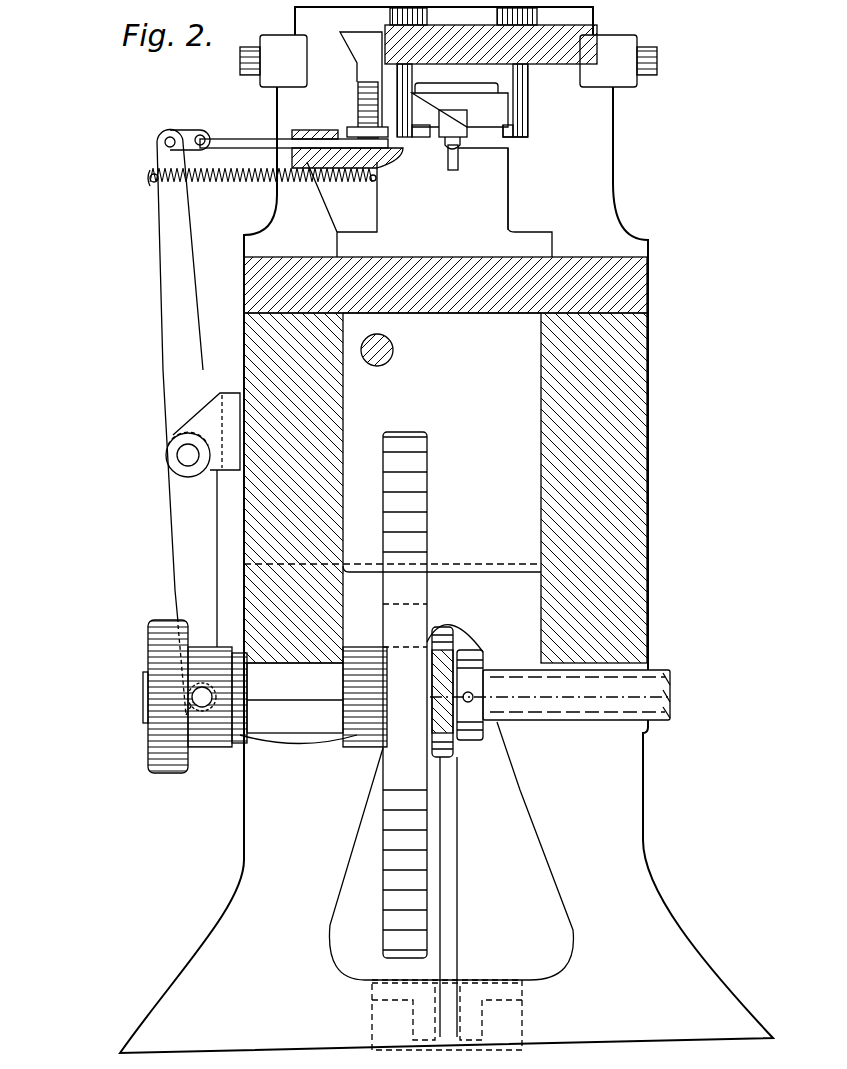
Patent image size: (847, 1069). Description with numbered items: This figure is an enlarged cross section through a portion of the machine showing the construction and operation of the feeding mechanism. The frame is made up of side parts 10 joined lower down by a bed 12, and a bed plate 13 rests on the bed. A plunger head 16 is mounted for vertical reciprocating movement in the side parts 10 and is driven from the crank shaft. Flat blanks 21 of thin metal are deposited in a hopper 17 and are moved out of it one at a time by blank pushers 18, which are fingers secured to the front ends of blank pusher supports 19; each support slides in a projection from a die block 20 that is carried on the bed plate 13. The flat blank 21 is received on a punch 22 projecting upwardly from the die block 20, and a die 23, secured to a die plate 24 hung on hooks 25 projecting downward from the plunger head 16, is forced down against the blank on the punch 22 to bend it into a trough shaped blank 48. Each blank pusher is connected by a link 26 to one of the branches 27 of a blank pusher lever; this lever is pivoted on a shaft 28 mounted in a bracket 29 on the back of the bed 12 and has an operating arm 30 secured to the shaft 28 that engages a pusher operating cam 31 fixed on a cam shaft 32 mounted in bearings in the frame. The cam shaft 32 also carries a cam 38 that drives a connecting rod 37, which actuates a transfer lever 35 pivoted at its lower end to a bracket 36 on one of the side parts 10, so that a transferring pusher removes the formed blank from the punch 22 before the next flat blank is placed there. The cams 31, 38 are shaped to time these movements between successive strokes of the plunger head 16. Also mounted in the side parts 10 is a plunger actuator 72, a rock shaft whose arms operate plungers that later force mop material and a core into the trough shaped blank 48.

The side parts 10 is at (632, 800).
The bed 12 is at (640, 484).
The bed plate 13 is at (640, 292).
The plunger head 16 is at (580, 42).
The hopper 17 is at (357, 70).
The blank pusher 18 is at (308, 130).
The blank pusher support 19 is at (232, 144).
The die block 20 is at (497, 192).
The flat blank 21 is at (358, 112).
The punch 22 is at (458, 160).
The die 23 is at (447, 130).
The die plate 24 is at (515, 112).
The hook 25 is at (530, 130).
The link 26 is at (200, 132).
The branch of blank pusher lever 27 is at (165, 265).
The shaft 28 is at (188, 460).
The bracket 29 is at (232, 385).
The operating arm 30 is at (182, 568).
The pusher operating cam 31 is at (162, 652).
The cam shaft 32 is at (660, 692).
The transfer lever 35 is at (448, 835).
The bracket 36 is at (515, 995).
The connecting rod 37 is at (470, 648).
The cam 38 is at (395, 900).
The trough shaped blank 48 is at (492, 113).
The plunger actuator 72 is at (393, 348).